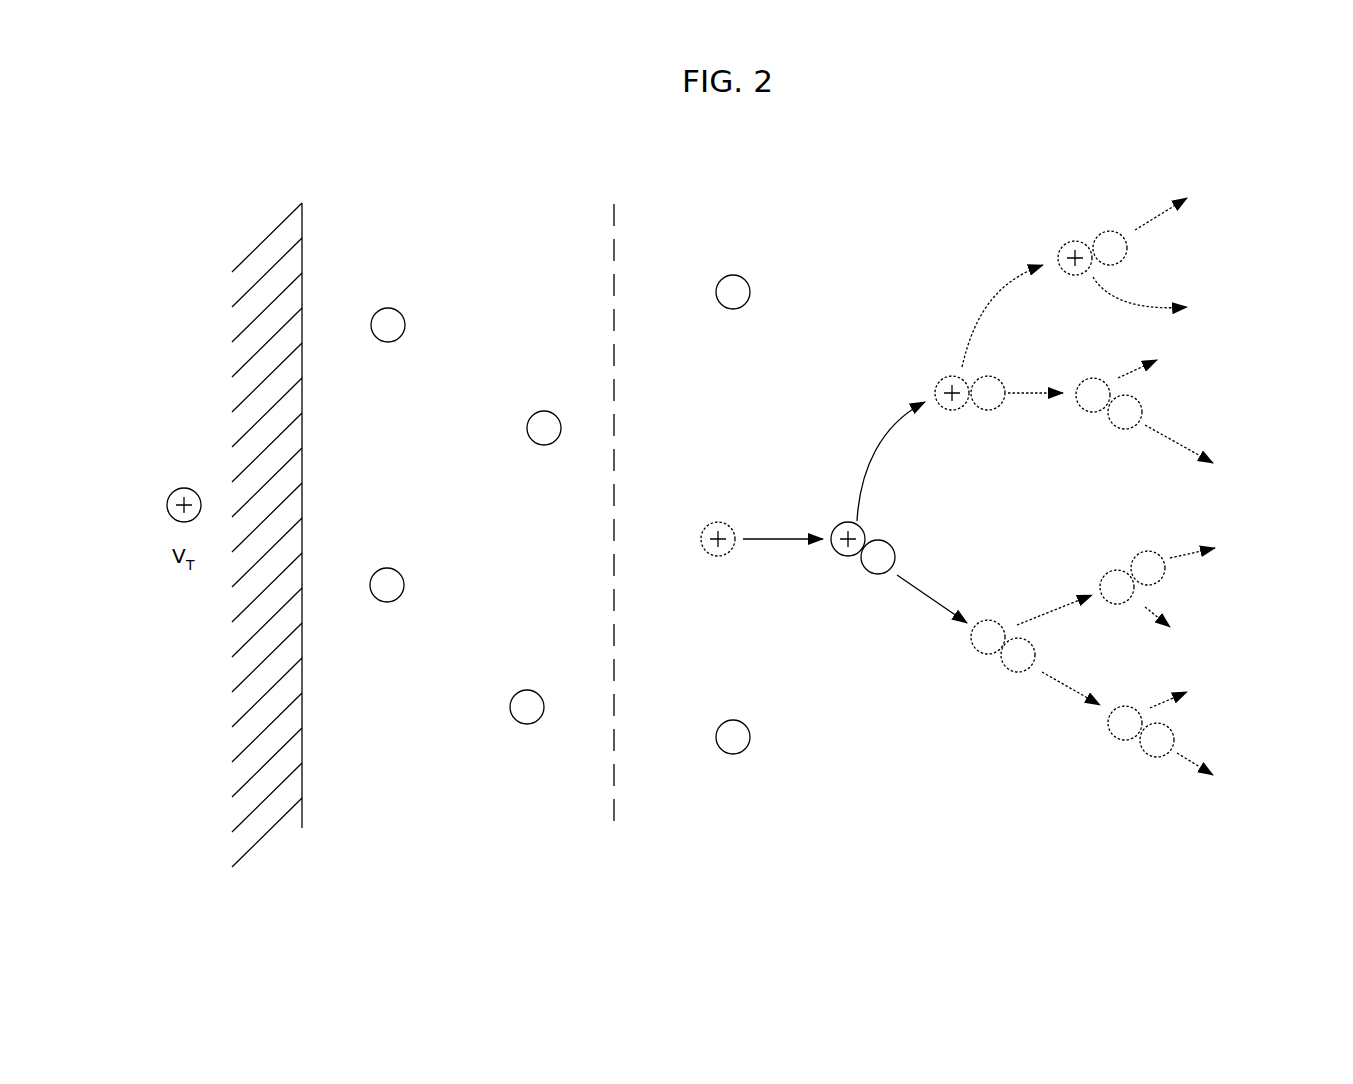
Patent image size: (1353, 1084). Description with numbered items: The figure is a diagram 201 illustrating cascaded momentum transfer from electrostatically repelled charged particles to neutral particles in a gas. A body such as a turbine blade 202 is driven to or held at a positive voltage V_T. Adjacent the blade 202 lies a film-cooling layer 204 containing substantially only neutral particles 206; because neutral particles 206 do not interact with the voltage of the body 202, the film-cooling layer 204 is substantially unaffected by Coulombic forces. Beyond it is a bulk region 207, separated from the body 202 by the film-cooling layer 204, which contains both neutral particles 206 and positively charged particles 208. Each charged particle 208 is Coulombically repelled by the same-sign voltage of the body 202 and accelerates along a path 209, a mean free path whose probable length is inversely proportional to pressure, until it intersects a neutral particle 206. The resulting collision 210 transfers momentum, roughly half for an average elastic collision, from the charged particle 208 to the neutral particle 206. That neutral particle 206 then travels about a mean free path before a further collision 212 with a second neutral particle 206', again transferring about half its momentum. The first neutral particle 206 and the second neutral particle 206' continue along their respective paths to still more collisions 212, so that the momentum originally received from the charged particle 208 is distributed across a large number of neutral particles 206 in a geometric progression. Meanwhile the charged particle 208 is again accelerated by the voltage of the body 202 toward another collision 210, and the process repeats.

The diagram 201 is at (825, 178).
The turbine blade 202 is at (303, 248).
The film-cooling layer 204 is at (614, 862).
The neutral particles 206 is at (670, 514).
The second neutral particle 206' is at (1011, 623).
The bulk region 207 is at (961, 832).
The charged particles 208 is at (718, 556).
The path 209 is at (778, 537).
The collision 210 is at (897, 577).
The collision 212 is at (1155, 427).